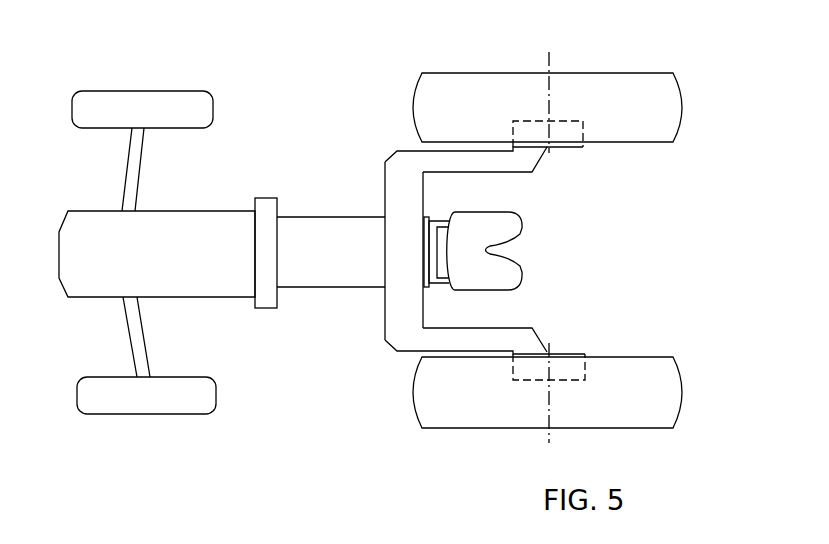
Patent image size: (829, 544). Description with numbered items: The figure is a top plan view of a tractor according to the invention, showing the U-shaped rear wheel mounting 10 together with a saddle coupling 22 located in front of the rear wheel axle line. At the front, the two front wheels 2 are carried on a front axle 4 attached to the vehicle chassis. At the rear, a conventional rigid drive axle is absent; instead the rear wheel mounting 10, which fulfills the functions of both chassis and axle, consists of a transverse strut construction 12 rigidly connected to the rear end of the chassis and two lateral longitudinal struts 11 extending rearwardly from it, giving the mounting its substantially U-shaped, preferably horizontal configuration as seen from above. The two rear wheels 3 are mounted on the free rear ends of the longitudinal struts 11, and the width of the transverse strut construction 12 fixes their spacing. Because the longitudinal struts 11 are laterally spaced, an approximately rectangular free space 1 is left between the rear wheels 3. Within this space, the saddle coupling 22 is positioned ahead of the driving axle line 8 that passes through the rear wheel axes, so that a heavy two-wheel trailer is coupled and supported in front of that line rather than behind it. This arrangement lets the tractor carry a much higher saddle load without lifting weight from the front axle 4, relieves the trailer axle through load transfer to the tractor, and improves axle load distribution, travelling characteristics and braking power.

The free space 1 is at (622, 260).
The front wheels 2 is at (100, 96).
The rear wheels 3 is at (445, 78).
The front axle 4 is at (130, 163).
The driving axle line 8 is at (547, 60).
The rear wheel mounting 10 is at (450, 250).
The longitudinal struts 11 is at (450, 165).
The transverse strut construction 12 is at (388, 306).
The saddle coupling 22 is at (514, 252).